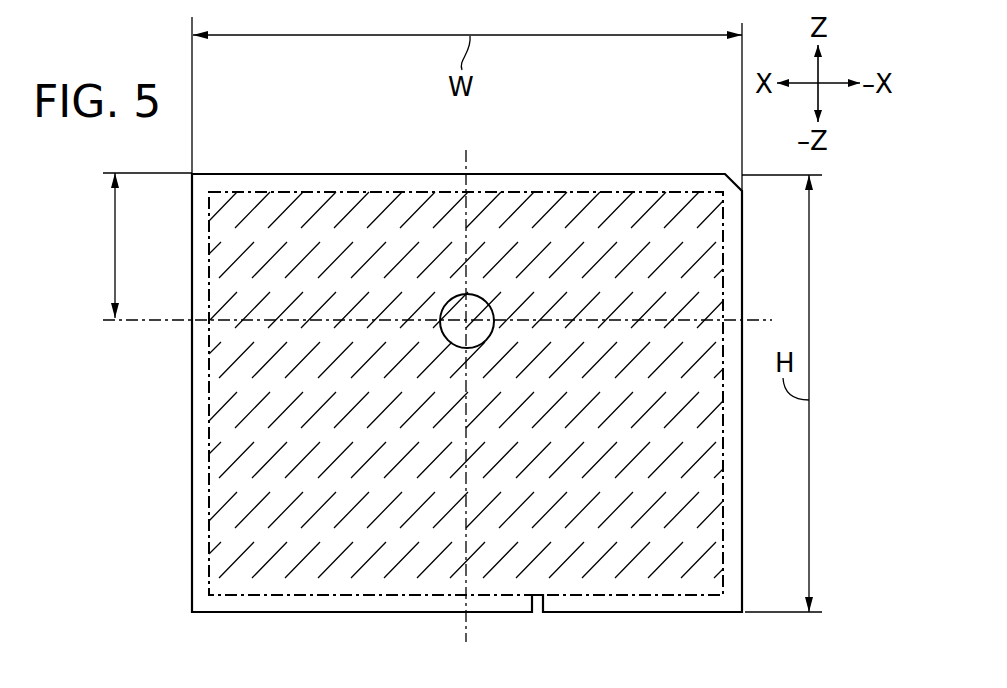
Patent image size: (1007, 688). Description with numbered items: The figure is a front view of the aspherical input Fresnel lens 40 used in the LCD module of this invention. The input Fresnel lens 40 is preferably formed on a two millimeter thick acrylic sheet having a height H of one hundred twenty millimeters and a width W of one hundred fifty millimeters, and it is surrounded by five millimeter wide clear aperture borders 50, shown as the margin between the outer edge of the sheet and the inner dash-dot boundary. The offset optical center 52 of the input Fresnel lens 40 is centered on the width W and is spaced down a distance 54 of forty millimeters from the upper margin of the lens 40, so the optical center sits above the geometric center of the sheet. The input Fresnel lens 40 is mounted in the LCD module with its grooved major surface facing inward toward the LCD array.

The input Fresnel lens 40 is at (148, 479).
The clear aperture border 50 is at (643, 183).
The offset optical center 52 is at (468, 320).
The distance 54 is at (112, 253).